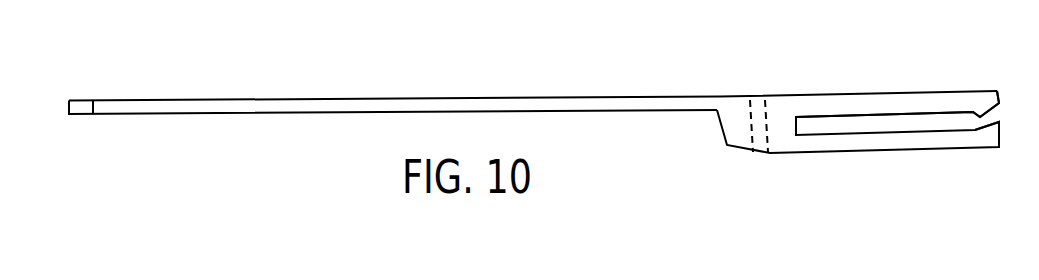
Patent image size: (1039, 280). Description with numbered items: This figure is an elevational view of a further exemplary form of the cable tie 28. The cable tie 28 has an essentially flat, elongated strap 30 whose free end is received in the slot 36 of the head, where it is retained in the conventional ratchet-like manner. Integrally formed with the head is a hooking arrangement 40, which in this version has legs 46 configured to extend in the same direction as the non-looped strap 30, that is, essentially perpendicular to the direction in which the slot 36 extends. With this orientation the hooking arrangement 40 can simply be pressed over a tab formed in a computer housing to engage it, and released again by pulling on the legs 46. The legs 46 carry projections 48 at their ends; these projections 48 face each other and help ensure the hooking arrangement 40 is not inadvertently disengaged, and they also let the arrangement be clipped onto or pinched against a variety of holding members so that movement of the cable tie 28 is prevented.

The cable tie 28 is at (287, 79).
The strap 30 is at (357, 110).
The slot 36 is at (754, 100).
The hooking arrangement 40 is at (880, 172).
The legs 46 is at (898, 103).
The projections 48 is at (995, 121).